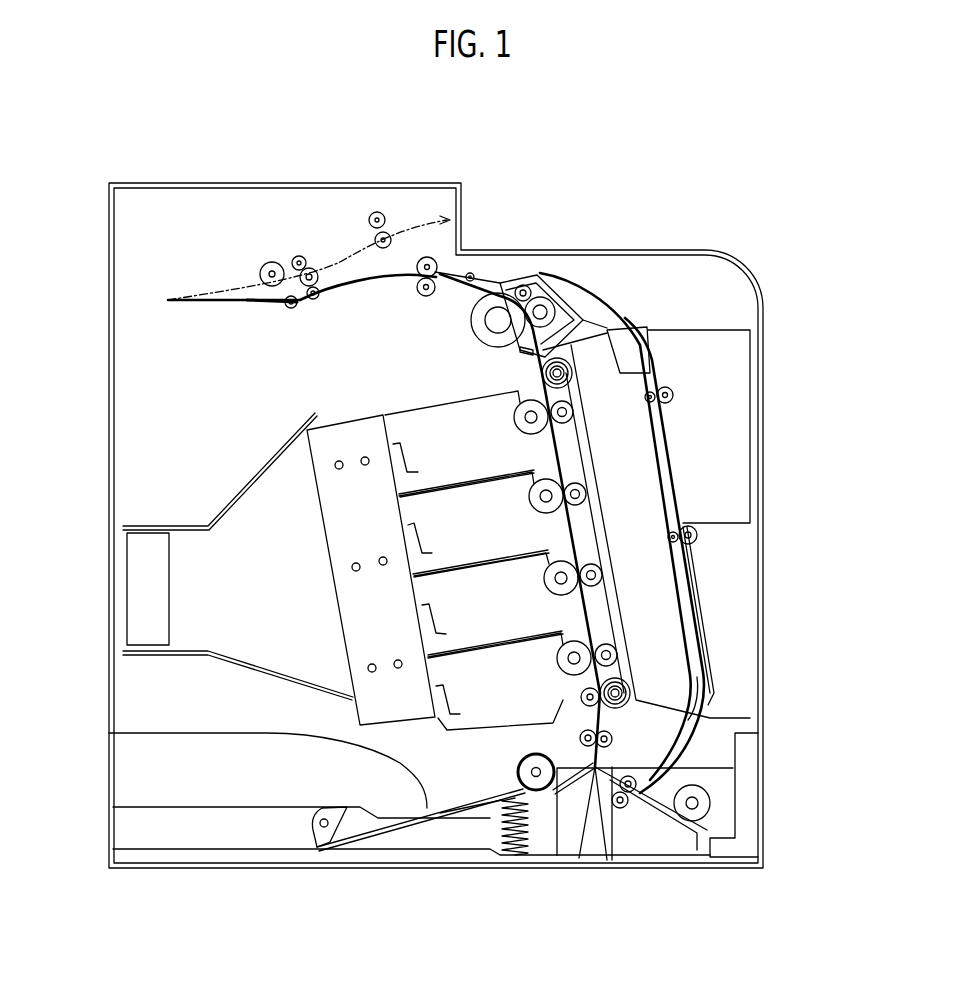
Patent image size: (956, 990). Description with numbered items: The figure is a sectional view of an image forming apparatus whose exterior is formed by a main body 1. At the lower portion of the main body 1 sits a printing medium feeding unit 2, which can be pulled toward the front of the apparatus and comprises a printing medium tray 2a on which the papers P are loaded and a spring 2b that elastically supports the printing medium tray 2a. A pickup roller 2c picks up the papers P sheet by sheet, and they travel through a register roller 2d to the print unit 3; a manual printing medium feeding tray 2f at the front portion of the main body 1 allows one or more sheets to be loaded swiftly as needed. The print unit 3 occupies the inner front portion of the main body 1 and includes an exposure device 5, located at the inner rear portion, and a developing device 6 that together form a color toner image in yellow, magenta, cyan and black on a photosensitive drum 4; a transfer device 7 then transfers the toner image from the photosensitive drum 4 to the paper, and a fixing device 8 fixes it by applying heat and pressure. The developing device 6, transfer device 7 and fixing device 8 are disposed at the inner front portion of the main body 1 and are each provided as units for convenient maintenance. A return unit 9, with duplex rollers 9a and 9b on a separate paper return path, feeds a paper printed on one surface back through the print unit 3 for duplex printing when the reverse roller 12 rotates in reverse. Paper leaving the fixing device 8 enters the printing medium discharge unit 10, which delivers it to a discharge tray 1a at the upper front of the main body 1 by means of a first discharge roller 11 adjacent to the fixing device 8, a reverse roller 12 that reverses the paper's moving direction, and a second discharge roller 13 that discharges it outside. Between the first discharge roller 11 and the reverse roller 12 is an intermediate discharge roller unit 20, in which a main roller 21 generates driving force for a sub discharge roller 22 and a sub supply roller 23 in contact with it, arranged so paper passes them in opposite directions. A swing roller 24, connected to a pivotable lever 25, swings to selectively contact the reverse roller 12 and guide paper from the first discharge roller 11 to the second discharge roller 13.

The main body 1 is at (763, 306).
The discharge tray 1a is at (574, 250).
The printing medium feeding unit 2 is at (502, 882).
The printing medium tray 2a is at (355, 843).
The spring 2b is at (522, 852).
The pickup roller 2c is at (517, 772).
The register roller 2d is at (579, 740).
The manual printing medium feeding tray 2f is at (765, 825).
The print unit 3 is at (331, 396).
The photosensitive drum 4 is at (516, 412).
The exposure device 5 is at (148, 540).
The developing device 6 is at (430, 412).
The transfer device 7 is at (590, 453).
The fixing device 8 is at (557, 300).
The return unit 9 is at (618, 322).
The duplex roller 9a is at (674, 394).
The duplex roller 9b is at (692, 527).
The printing medium discharge unit 10 is at (424, 200).
The first discharge roller 11 is at (437, 258).
The reverse roller 12 is at (260, 273).
The second discharge roller 13 is at (377, 212).
The intermediate discharge roller unit 20 is at (294, 229).
The main roller 21 is at (318, 278).
The sub discharge roller 22 is at (292, 261).
The sub supply roller 23 is at (319, 297).
The swing roller 24 is at (291, 309).
The lever 25 is at (258, 304).
The papers P is at (109, 733).